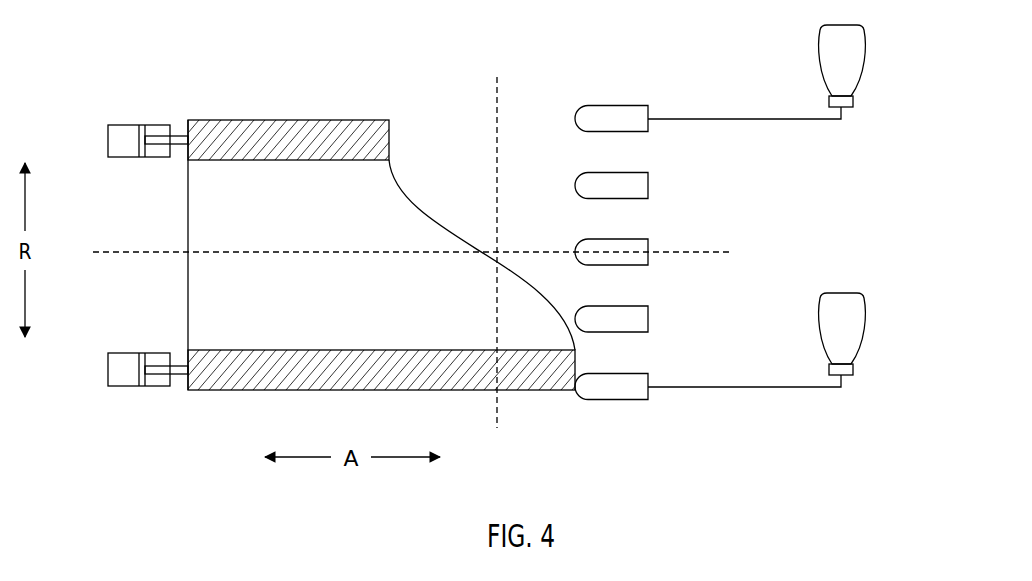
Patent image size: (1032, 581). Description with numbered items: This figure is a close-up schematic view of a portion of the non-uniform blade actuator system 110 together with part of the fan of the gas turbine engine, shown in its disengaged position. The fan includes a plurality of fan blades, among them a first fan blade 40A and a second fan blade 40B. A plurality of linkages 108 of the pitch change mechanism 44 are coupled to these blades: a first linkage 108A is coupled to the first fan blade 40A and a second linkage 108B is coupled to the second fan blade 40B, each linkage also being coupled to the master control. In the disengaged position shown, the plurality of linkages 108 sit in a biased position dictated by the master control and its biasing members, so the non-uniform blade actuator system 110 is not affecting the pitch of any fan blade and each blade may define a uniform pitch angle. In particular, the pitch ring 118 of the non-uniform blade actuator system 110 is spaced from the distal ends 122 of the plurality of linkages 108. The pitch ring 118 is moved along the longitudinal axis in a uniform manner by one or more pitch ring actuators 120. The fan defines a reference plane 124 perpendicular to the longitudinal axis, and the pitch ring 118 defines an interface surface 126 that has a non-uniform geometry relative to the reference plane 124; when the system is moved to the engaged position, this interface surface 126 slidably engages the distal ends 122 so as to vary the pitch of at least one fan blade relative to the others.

The pitch change mechanism 44 is at (356, 204).
The non-uniform blade actuator system 110 is at (231, 66).
The pitch ring 118 is at (286, 130).
The pitch ring actuators 120 is at (106, 137).
The distal ends 122 is at (568, 117).
The reference plane 124 is at (496, 95).
The interface surface 126 is at (397, 158).
The plurality of linkages 108 is at (645, 189).
The first linkage 108A is at (625, 116).
The second linkage 108B is at (625, 390).
The first fan blade 40A is at (853, 57).
The second fan blade 40B is at (853, 322).